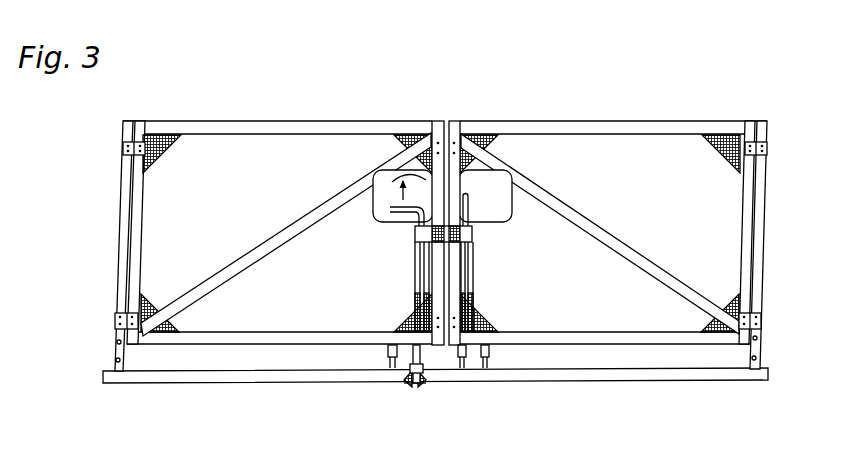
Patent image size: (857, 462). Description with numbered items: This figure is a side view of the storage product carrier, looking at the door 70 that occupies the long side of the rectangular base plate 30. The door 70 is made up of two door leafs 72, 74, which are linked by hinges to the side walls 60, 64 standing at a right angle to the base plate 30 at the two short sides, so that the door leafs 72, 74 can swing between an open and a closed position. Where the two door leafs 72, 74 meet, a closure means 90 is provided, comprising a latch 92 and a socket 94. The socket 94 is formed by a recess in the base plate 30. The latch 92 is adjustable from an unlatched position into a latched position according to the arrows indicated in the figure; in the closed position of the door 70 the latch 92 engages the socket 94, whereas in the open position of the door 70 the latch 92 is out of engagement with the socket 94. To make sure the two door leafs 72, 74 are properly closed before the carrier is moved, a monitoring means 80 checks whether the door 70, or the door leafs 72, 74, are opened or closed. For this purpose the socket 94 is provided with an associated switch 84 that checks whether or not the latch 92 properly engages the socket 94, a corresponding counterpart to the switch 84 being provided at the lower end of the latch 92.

The base plate 30 is at (126, 387).
The side wall 60 is at (128, 131).
The side wall 64 is at (763, 130).
The door 70 is at (453, 95).
The door leaf 72 is at (267, 121).
The door leaf 74 is at (661, 121).
The monitoring means 80 is at (416, 386).
The switch 84 is at (411, 385).
The closure means 90 is at (438, 398).
The latch 92 is at (469, 193).
The socket 94 is at (389, 353).